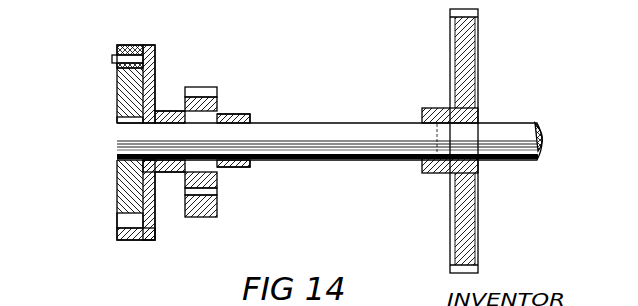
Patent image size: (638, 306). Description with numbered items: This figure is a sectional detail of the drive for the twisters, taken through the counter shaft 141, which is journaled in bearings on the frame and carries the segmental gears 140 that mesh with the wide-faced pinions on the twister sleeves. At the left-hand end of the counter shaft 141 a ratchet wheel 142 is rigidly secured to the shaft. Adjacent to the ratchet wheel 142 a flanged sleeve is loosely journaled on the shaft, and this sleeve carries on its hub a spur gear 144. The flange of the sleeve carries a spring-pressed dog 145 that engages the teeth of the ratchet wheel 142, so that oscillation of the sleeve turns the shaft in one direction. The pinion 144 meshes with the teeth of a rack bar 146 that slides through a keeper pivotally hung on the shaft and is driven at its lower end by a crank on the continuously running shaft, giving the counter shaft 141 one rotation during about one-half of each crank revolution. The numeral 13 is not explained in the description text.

The ring 13 is at (133, 50).
The segmental gear 140 is at (465, 70).
The counter shaft 141 is at (290, 132).
The ratchet wheel 142 is at (130, 91).
The spur gear 144 is at (262, 70).
The spring-pressed dog 145 is at (114, 65).
The rack bar 146 is at (218, 205).